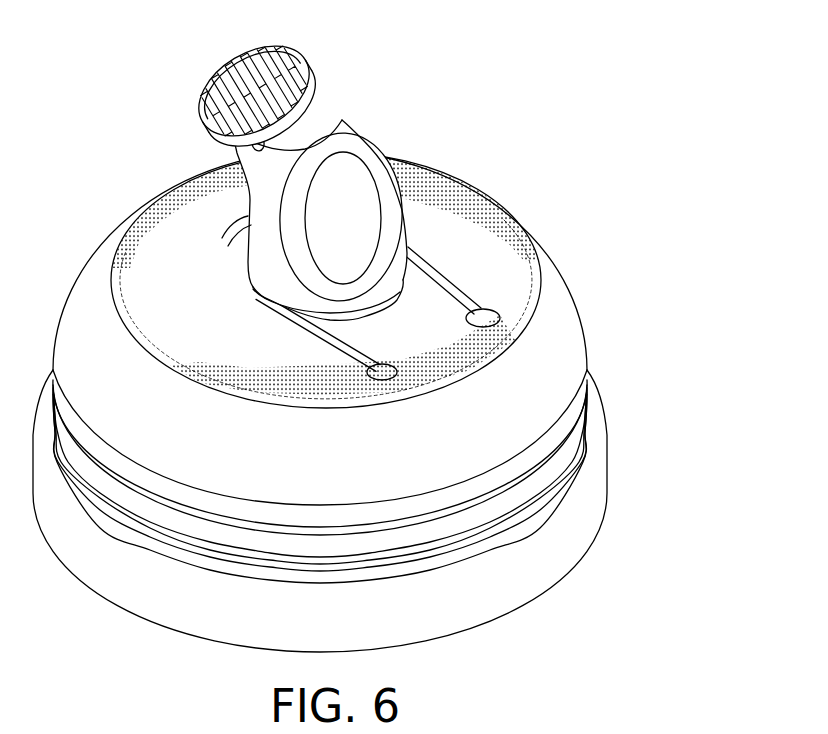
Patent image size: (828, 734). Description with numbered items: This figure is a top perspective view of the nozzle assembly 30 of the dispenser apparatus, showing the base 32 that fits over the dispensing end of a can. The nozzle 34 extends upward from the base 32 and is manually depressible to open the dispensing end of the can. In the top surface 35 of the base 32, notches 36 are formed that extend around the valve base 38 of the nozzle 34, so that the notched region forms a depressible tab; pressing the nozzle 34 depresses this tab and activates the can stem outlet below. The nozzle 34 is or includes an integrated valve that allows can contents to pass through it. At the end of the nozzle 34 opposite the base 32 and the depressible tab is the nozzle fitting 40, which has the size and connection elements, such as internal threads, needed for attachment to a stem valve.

The nozzle assembly 30 is at (606, 540).
The base 32 is at (553, 343).
The nozzle 34 is at (337, 180).
The top surface 35 is at (507, 273).
The notches 36 is at (463, 296).
The valve base 38 is at (262, 250).
The nozzle fitting 40 is at (208, 75).